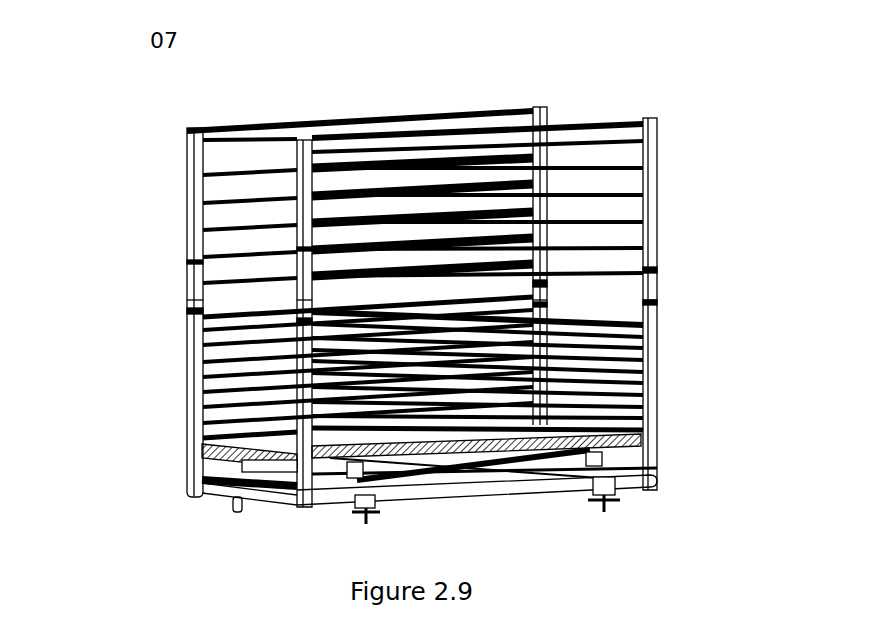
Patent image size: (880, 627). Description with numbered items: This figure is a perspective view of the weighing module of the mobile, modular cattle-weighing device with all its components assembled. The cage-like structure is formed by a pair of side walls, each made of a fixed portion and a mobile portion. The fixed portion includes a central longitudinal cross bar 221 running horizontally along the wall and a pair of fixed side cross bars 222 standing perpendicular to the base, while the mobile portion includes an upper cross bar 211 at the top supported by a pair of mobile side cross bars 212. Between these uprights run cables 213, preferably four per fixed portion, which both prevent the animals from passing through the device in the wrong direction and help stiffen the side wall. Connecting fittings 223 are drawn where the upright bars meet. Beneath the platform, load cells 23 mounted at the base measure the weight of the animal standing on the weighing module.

The upper cross bar 211 is at (497, 133).
The mobile side cross bars 212 is at (161, 181).
The cable 213 is at (648, 149).
The central longitudinal cross bar 221 is at (219, 326).
The fixed side cross bars 222 is at (184, 408).
The connector 223 is at (168, 273).
The load cell 23 is at (393, 505).